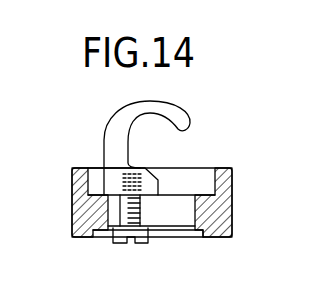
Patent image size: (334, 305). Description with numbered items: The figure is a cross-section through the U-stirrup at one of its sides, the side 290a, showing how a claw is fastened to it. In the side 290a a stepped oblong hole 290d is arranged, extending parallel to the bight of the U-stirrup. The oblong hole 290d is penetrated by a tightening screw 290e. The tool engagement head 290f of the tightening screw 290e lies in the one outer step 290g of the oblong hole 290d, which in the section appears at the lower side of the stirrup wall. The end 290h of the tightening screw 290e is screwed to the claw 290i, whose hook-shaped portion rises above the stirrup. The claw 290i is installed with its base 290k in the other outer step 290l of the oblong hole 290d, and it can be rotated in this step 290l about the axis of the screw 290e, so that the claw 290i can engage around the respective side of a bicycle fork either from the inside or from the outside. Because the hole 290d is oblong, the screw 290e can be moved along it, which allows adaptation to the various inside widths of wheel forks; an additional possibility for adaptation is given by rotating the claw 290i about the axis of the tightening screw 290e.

The side of the U-stirrup 290a is at (232, 207).
The stepped oblong hole 290d is at (188, 196).
The tightening screw 290e is at (142, 204).
The tool engagement head 290f is at (113, 244).
The outer step 290g is at (200, 237).
The end of the tightening screw 290h is at (141, 179).
The claw 290i is at (124, 128).
The base of the claw 290k is at (106, 177).
The other outer step 290l is at (194, 177).